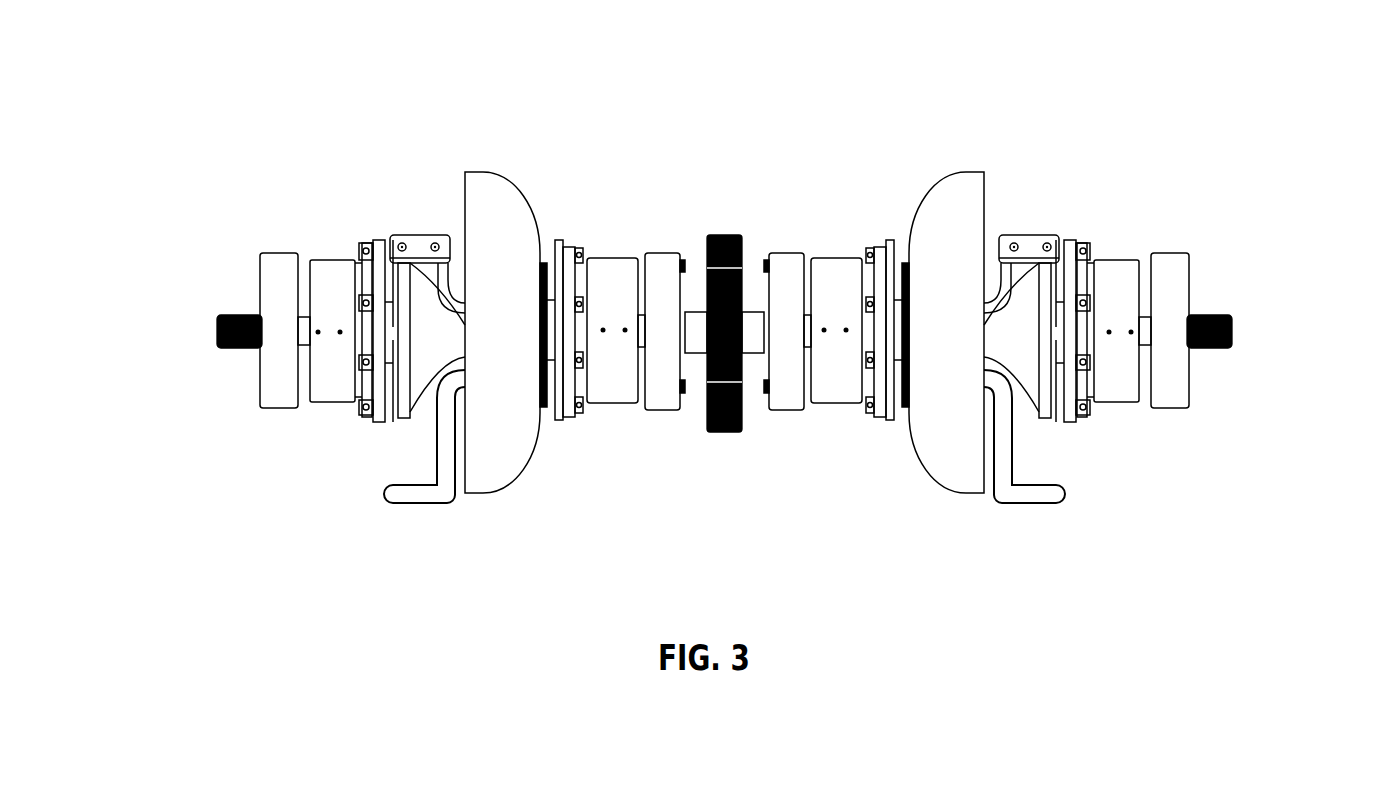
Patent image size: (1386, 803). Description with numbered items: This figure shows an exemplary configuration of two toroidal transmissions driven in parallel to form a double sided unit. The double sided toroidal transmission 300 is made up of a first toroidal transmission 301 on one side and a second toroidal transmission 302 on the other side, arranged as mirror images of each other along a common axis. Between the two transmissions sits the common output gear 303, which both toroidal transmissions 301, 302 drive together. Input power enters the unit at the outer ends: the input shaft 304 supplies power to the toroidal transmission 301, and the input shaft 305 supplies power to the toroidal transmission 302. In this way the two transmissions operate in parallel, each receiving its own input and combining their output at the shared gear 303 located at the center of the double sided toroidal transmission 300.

The double sided toroidal transmission 300 is at (390, 185).
The toroidal transmission 301 is at (461, 480).
The toroidal transmission 302 is at (983, 493).
The common output gear 303 is at (727, 233).
The input shaft 304 is at (215, 333).
The input shaft 305 is at (1237, 332).